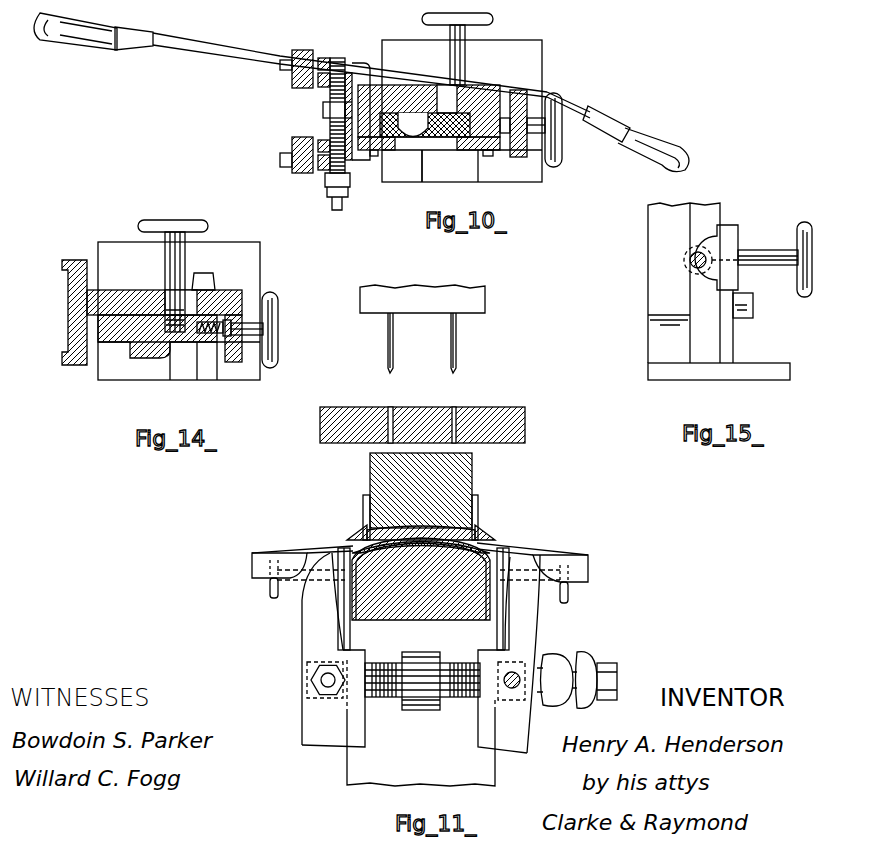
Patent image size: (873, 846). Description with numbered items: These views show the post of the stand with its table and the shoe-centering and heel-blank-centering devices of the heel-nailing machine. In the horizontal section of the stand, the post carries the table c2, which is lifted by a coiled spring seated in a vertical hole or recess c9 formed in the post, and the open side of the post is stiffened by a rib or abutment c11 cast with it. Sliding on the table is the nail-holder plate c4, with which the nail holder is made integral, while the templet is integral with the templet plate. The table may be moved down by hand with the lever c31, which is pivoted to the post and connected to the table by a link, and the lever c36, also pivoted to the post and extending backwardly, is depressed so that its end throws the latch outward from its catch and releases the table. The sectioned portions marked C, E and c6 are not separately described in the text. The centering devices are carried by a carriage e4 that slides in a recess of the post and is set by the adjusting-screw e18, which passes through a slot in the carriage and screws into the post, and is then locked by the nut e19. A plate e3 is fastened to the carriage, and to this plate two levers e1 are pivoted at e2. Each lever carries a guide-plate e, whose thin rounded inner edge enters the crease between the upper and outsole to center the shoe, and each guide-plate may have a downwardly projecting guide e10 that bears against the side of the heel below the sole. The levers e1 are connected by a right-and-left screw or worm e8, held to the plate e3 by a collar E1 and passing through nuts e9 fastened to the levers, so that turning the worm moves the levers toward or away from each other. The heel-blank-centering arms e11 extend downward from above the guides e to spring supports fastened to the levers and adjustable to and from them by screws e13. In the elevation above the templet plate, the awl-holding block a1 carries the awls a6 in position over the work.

In FIG. 10, the lever c31 is at (206, 52).
In FIG. 10, the lever c36 is at (638, 126).
In FIG. 10, the table c2 is at (394, 80).
In FIG. 11, the sliding plate c4 is at (422, 412).
In FIG. 10, the clamp jaw c6 is at (385, 142).
In FIG. 10, the vertical hole or recess c9 is at (340, 32).
In FIG. 10, the rib or abutment c11 is at (425, 150).
In FIG. 10, the clamp C is at (470, 90).
In FIG. 14, the clamp C is at (164, 326).
In FIG. 10, the adjusting nut E is at (323, 112).
In FIG. 11, the collar E1 is at (421, 681).
In FIG. 11, the guide-plate e is at (420, 558).
In FIG. 10, the lever e1 is at (286, 180).
In FIG. 11, the lever e1 is at (421, 653).
In FIG. 11, the pivot e2 is at (300, 679).
In FIG. 11, the plate e3 is at (421, 723).
In FIG. 10, the carriage e4 is at (364, 64).
In FIG. 14, the carriage e4 is at (82, 262).
In FIG. 15, the carriage e4 is at (716, 257).
In FIG. 10, the right-and-left screw or worm e8 is at (318, 98).
In FIG. 11, the right-and-left screw or worm e8 is at (422, 680).
In FIG. 11, the nut e9 is at (510, 690).
In FIG. 11, the downwardly-projecting guide e10 is at (345, 546).
In FIG. 11, the arm e11 is at (364, 500).
In FIG. 11, the screw e13 is at (266, 590).
In FIG. 10, the adjusting-screw e18 is at (533, 158).
In FIG. 14, the adjusting-screw e18 is at (249, 340).
In FIG. 15, the adjusting-screw e18 is at (680, 262).
In FIG. 14, the locking-nut e19 is at (190, 275).
In FIG. 15, the locking-nut e19 is at (778, 250).
In FIG. 11, the awl-holding block a1 is at (422, 299).
In FIG. 11, the awl a6 is at (431, 343).